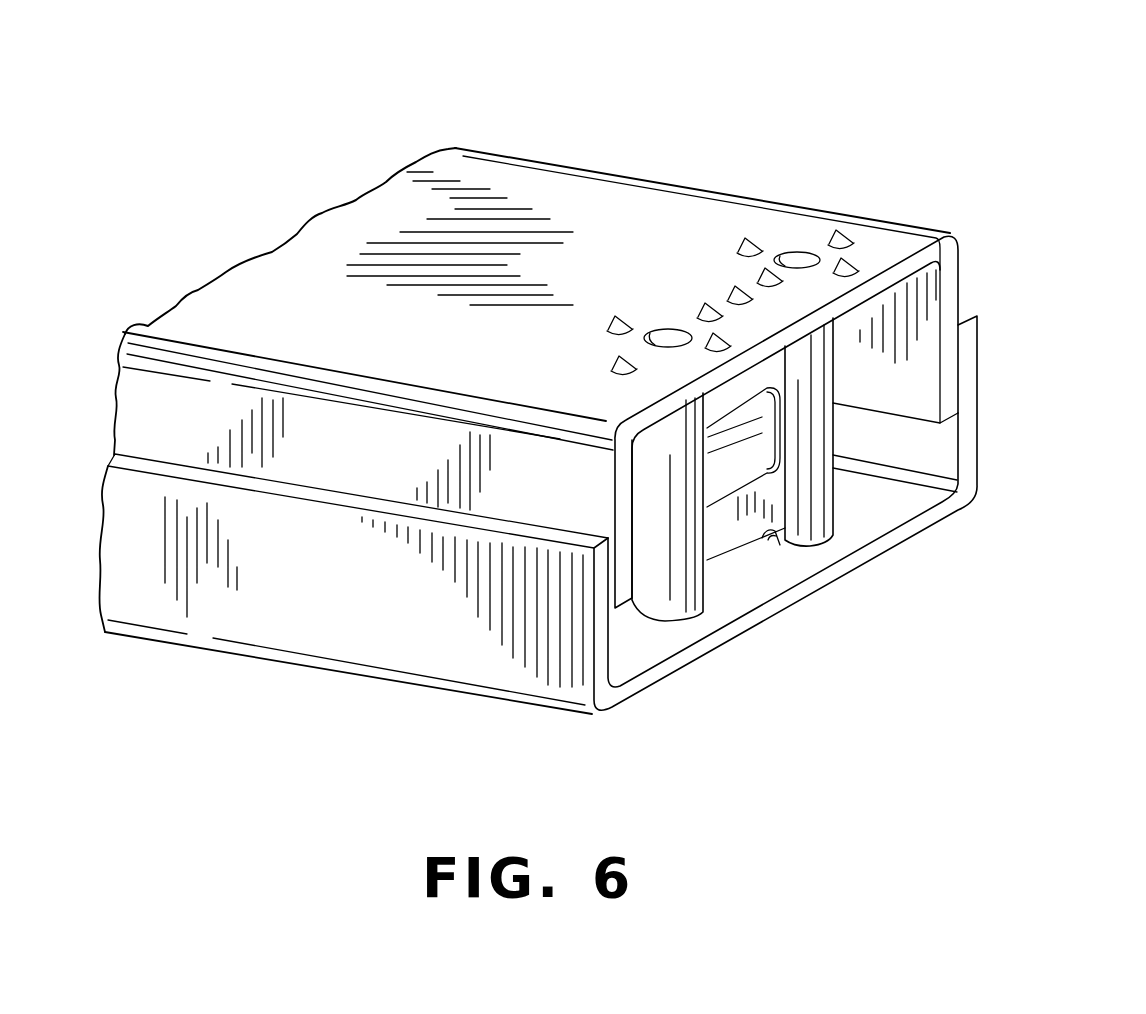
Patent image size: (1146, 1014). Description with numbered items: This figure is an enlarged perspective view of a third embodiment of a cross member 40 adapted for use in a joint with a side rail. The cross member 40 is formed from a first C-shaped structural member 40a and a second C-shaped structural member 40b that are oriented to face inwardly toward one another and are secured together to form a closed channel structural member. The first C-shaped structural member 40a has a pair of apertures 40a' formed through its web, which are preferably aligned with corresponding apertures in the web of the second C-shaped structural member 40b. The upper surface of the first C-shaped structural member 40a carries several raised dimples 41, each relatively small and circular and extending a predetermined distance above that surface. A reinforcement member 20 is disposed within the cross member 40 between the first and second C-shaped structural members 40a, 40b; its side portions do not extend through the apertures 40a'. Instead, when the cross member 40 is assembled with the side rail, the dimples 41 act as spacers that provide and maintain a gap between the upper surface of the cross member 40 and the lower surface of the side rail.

The cross member 40 is at (616, 366).
The first C-shaped structural member 40a is at (536, 320).
The apertures 40a' is at (721, 224).
The second C-shaped structural member 40b is at (977, 431).
The raised dimples 41 is at (613, 360).
The reinforcement member 20 is at (751, 551).